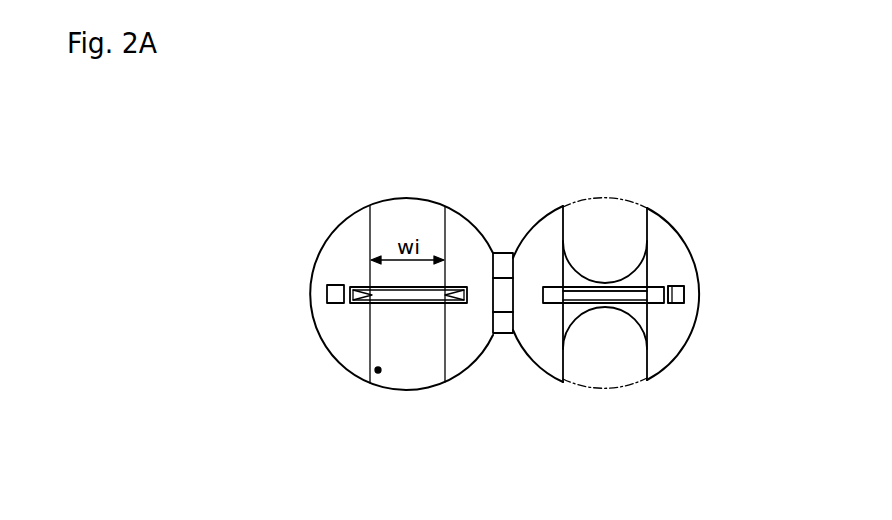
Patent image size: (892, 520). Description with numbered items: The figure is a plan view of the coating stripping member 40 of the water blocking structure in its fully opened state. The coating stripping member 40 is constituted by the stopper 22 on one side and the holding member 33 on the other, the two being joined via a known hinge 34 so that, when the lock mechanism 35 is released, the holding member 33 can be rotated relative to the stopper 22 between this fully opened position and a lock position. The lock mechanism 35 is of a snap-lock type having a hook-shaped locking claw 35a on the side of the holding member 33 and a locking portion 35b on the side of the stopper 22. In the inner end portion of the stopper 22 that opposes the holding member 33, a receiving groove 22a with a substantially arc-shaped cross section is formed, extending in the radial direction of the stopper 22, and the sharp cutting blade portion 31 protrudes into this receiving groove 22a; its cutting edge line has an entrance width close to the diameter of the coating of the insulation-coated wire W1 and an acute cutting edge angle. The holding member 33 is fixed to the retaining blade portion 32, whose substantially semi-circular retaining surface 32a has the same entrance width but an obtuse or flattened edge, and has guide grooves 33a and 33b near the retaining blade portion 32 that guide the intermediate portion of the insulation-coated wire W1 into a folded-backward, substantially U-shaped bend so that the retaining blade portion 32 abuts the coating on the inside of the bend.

The stopper 22 is at (349, 213).
The receiving groove 22a is at (382, 376).
The cutting blade portion 31 is at (395, 303).
The retaining blade portion 32 is at (660, 303).
The retaining surface 32a is at (580, 292).
The holding member 33 is at (678, 238).
The guide groove 33a is at (640, 263).
The guide groove 33b is at (637, 322).
The hinge 34 is at (506, 325).
The lock mechanism 35 is at (722, 283).
The locking claw 35a is at (687, 294).
The locking portion 35b is at (332, 284).
The coating stripping member 40 is at (467, 182).
The insulation-coated wire W1 is at (607, 197).